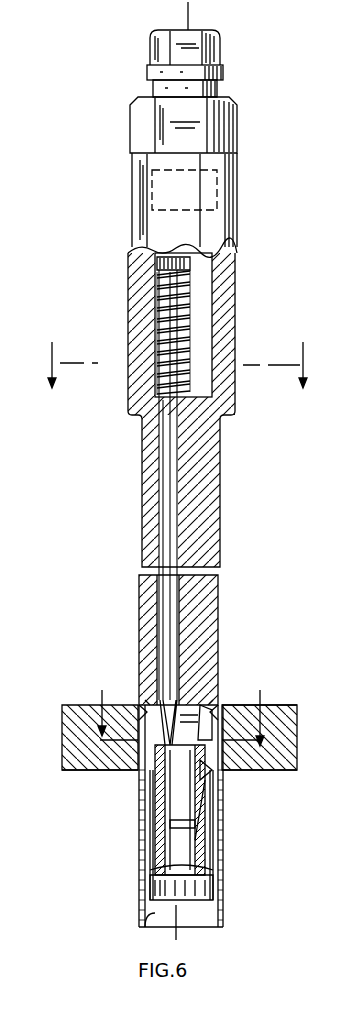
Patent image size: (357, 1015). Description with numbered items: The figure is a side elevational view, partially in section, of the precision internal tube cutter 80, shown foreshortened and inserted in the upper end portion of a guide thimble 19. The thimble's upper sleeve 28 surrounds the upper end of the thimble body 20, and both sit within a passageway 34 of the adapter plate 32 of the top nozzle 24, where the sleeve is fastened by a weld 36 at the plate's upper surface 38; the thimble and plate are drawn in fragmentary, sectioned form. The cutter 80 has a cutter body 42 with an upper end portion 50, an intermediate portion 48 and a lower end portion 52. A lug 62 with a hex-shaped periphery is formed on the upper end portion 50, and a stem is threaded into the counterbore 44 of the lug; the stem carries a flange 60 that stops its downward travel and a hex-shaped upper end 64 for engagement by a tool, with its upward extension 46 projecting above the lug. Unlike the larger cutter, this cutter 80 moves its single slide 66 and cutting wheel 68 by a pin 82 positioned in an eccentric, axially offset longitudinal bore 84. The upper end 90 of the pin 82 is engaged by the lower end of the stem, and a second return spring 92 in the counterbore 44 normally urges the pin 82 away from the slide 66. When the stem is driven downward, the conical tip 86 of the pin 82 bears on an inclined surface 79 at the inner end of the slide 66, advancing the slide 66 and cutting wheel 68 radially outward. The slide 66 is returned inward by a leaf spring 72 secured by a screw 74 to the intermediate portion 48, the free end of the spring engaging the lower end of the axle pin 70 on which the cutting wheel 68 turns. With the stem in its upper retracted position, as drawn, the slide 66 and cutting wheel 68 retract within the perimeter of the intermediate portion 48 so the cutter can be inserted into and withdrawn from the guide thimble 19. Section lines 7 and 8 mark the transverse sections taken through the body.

The precision tube cutter 80 is at (118, 62).
The stem 46 is at (188, 22).
The hex-shaped upper end 64 is at (218, 44).
The flange 60 is at (223, 72).
The lug 62 is at (237, 126).
The cutter body 42 is at (240, 338).
The counterbore 44 is at (212, 290).
The upper end of the pin 90 is at (158, 263).
The second return spring 92 is at (158, 330).
The section line 7 is at (178, 351).
The eccentric longitudinal bore 84 is at (160, 511).
The upper end portion 50 is at (141, 651).
The pin 82 is at (180, 650).
The slide 66 is at (206, 700).
The section line 8 is at (179, 707).
The weld 36 is at (144, 703).
The conical tip 86 is at (128, 715).
The adapter plate 32 is at (297, 742).
The upper surface 38 is at (276, 705).
The inclined surface 79 is at (139, 744).
The cutting wheel 68 is at (236, 745).
The top nozzle 24 is at (66, 774).
The passageway 34 is at (139, 788).
The guide thimble 19 is at (228, 898).
The upper sleeve 28 is at (224, 856).
The intermediate body portion 48 is at (150, 815).
The axle pin 70 is at (213, 772).
The return spring 72 is at (222, 786).
The screw 74 is at (204, 821).
The lower end portion 52 is at (150, 886).
The thimble body 20 is at (140, 926).